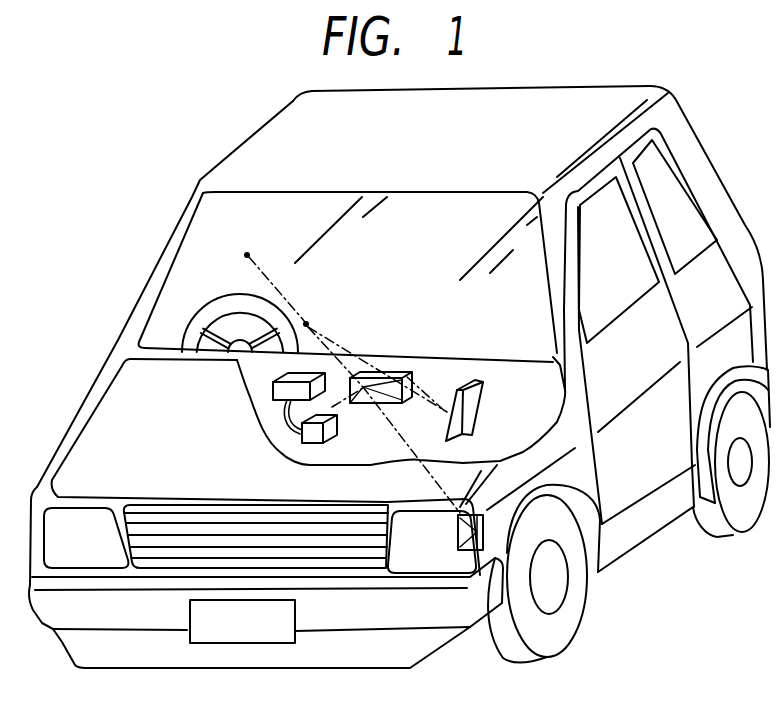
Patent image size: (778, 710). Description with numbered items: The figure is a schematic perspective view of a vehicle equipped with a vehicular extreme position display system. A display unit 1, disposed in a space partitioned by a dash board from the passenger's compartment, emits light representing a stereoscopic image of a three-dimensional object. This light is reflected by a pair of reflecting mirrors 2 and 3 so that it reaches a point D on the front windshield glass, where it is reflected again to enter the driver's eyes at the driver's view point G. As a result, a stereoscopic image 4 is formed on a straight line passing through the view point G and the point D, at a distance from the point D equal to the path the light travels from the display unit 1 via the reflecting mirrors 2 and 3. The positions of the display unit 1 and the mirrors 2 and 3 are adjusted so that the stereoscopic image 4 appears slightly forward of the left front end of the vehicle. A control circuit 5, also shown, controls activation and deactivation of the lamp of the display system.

The display unit 1 is at (340, 432).
The reflecting mirror 2 is at (397, 371).
The reflecting mirror 3 is at (483, 383).
The stereoscopic image 4 is at (458, 528).
The control circuit 5 is at (273, 390).
The driver's view point G is at (247, 240).
The point on front windshield glass D is at (311, 307).